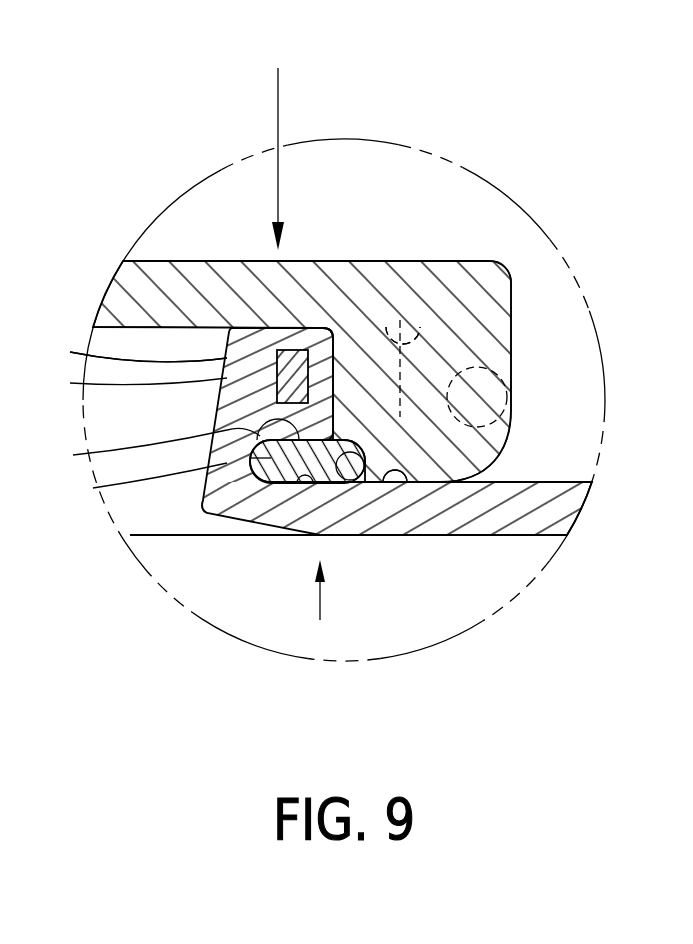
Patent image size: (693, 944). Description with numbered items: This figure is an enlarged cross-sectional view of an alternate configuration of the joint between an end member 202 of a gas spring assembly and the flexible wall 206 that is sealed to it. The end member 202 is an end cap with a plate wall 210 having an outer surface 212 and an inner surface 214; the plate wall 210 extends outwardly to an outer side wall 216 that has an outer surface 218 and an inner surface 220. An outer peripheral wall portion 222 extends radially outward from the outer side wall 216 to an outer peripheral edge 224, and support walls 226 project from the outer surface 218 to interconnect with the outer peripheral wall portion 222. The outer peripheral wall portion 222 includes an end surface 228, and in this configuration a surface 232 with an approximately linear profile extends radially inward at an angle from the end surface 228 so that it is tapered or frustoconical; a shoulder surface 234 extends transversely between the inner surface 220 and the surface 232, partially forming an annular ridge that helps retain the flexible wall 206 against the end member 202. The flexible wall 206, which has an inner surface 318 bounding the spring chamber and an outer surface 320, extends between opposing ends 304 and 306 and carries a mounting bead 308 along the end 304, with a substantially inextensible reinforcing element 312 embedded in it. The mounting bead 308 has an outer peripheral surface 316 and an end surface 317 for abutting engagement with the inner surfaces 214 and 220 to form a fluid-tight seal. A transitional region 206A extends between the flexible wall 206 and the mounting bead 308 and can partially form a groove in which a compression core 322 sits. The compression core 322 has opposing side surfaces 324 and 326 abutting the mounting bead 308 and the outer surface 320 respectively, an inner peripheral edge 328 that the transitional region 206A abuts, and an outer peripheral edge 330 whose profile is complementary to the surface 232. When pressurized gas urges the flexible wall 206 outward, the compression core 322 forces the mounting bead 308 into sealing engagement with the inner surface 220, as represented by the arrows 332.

The end member 202 is at (278, 145).
The flexible wall 206 is at (531, 562).
The transitional region 206A is at (93, 488).
The plate wall 210 is at (138, 297).
The outer surface 212 is at (219, 261).
The inner surface 214 is at (140, 327).
The outer side wall 216 is at (378, 370).
The outer surface 218 is at (423, 307).
The inner surface 220 is at (340, 347).
The outer peripheral wall portion 222 is at (420, 453).
The outer peripheral edge 224 is at (510, 413).
The support wall 226 is at (473, 303).
The end surface 228 is at (392, 484).
The surface 232 is at (343, 487).
The shoulder surface 234 is at (480, 411).
The end 304 is at (204, 574).
The end 306 is at (113, 353).
The mounting bead 308 is at (227, 406).
The reinforcing element 312 is at (80, 384).
The outer peripheral surface 316 is at (313, 335).
The end surface 317 is at (80, 354).
The inner surface 318 is at (503, 534).
The outer surface 320 is at (555, 482).
The compression core 322 is at (283, 485).
The side surface 324 is at (80, 455).
The side surface 326 is at (323, 468).
The inner peripheral edge 328 is at (200, 511).
The outer peripheral edge 330 is at (303, 480).
The arrows 332 is at (328, 600).